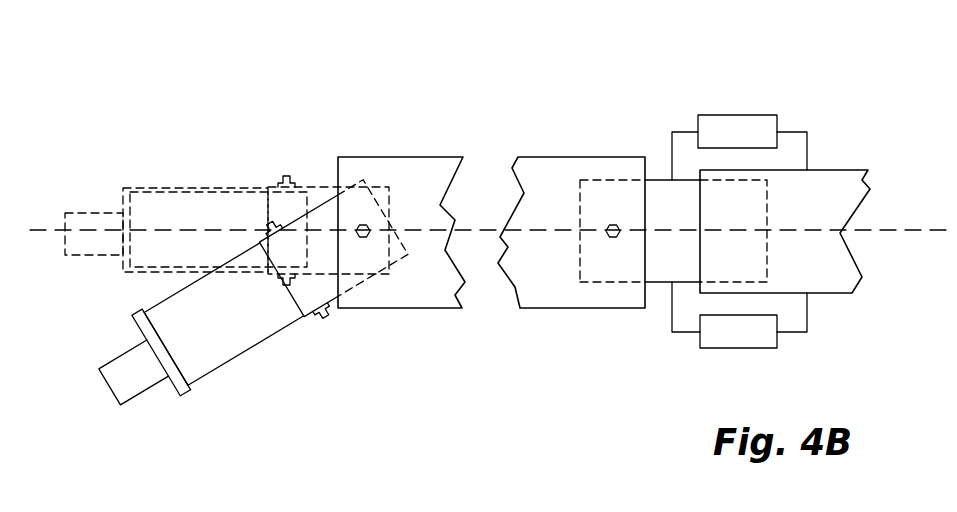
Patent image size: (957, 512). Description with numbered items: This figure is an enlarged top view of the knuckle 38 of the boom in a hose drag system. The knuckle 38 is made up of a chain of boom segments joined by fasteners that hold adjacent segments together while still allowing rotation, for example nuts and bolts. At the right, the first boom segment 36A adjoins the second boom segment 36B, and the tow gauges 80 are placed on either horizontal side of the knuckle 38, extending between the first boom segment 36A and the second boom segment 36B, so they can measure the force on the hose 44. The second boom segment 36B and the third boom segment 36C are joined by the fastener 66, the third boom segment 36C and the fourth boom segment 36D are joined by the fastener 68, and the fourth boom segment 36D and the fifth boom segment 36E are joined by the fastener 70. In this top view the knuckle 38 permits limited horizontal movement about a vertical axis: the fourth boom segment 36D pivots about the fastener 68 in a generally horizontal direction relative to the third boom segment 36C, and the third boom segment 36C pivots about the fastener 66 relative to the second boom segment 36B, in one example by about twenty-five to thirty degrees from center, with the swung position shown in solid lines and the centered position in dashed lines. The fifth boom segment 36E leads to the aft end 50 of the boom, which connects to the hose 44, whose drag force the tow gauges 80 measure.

The knuckle 38 is at (346, 110).
The first boom segment 36A is at (835, 250).
The second boom segment 36B is at (660, 193).
The third boom segment 36C is at (562, 297).
The fourth boom segment 36D is at (318, 203).
The fifth boom segment 36E is at (205, 352).
The hose 44 is at (130, 373).
The aft end 50 is at (137, 332).
The fastener 66 is at (607, 226).
The fastener 68 is at (363, 238).
The fastener 70 is at (328, 323).
The tow gauges 80 is at (735, 104).